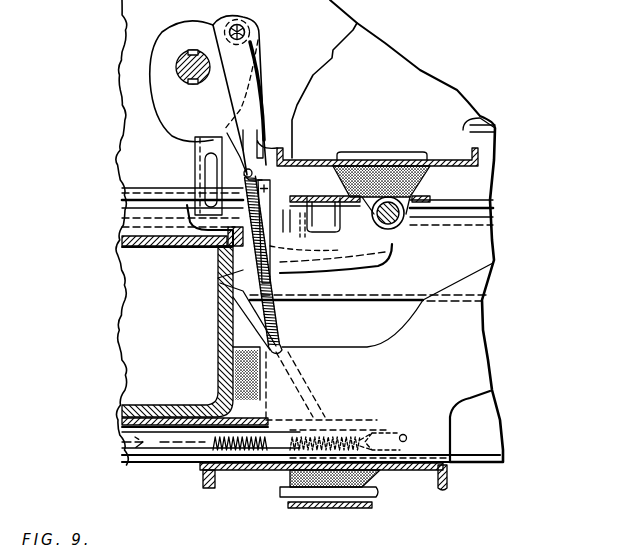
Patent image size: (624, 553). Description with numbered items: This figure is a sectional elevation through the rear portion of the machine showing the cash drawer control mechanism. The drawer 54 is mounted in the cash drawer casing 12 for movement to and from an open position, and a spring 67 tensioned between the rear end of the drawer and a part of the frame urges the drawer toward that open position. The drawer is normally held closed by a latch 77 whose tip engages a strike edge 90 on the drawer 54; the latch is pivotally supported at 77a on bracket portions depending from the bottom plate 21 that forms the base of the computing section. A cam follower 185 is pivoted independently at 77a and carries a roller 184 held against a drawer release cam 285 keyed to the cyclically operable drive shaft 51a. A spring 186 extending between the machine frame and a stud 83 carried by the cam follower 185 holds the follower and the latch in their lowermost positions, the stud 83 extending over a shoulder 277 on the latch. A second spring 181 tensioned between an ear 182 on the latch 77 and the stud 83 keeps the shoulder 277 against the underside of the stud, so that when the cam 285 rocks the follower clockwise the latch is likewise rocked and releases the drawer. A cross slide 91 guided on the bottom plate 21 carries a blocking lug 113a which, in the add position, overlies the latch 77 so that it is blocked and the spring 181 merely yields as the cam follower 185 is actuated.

The cash drawer casing 12 is at (490, 440).
The bottom plate 21 is at (434, 197).
The drive shaft 51a is at (178, 62).
The drawer 54 is at (122, 340).
The spring 67 is at (200, 462).
The latch 77 is at (198, 166).
The pivot 77a is at (398, 228).
The stud 83 is at (200, 148).
The strike edge 90 is at (178, 240).
The cross slide 91 is at (318, 226).
The blocking lug 113a is at (300, 160).
The second spring 181 is at (233, 270).
The ear 182 is at (220, 292).
The roller 184 is at (246, 27).
The cam follower 185 is at (283, 137).
The spring 186 is at (276, 283).
The shoulder 277 is at (272, 182).
The drawer release cam 285 is at (258, 60).